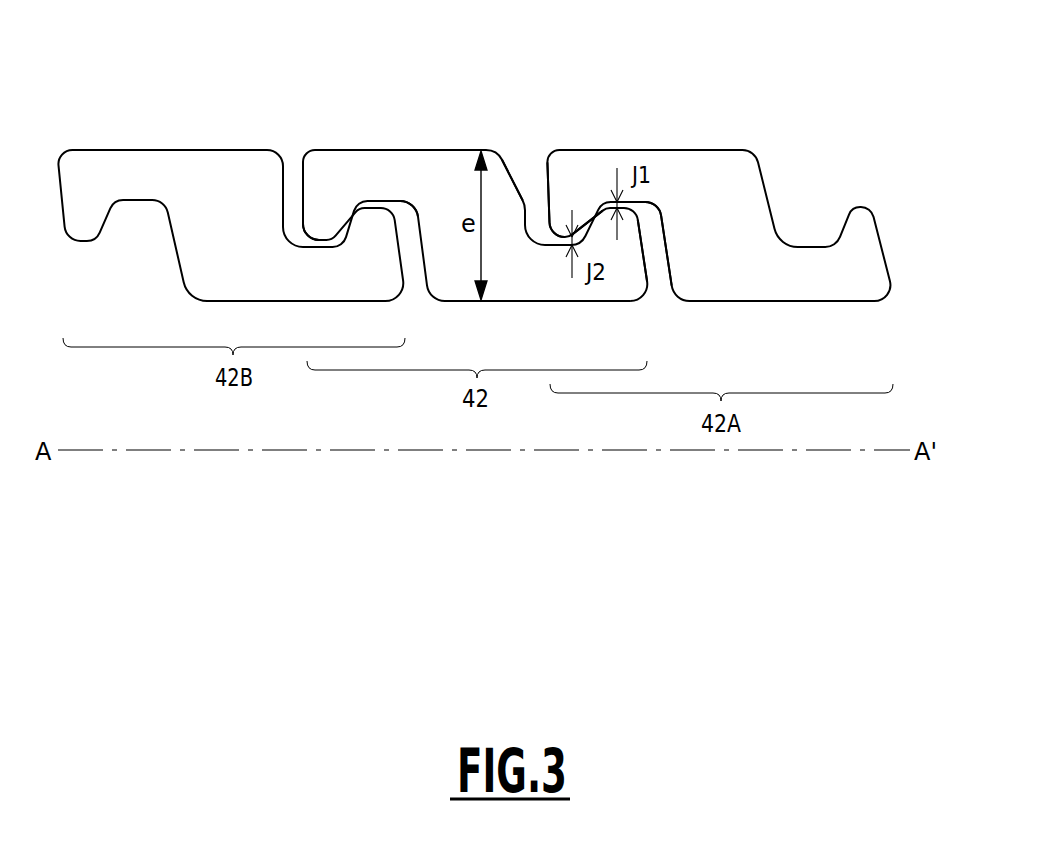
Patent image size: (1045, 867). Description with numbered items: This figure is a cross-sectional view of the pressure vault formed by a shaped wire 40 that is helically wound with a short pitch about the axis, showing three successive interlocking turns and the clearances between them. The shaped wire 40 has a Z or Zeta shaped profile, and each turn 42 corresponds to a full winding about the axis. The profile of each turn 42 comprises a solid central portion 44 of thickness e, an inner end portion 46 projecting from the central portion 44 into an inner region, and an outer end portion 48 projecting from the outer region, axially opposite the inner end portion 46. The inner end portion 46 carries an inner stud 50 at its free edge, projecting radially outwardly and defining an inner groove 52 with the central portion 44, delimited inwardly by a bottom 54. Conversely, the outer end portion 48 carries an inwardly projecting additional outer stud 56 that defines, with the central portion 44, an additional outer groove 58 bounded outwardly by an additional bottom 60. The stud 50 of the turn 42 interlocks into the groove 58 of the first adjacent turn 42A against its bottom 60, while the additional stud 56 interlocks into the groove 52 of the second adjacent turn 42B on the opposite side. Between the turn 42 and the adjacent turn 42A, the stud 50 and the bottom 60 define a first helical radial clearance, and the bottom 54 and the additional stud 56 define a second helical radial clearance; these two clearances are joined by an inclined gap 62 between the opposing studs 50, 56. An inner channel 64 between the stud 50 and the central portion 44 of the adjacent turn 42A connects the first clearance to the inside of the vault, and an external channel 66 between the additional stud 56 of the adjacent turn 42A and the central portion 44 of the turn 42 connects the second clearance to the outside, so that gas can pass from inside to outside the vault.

The shaped wire 40 is at (877, 128).
The turn 42 is at (820, 288).
The first adjacent turn 42A is at (718, 225).
The second adjacent turn 42B is at (344, 225).
The central portion 44 is at (463, 203).
The inner end portion 46 is at (617, 272).
The outer end portion 48 is at (363, 183).
The inner stud 50 is at (666, 259).
The inner groove 52 is at (322, 272).
The bottom 54 is at (318, 243).
The additional outer stud 56 is at (327, 218).
The additional outer groove 58 is at (395, 184).
The additional bottom 60 is at (385, 200).
The inclined gap 62 is at (590, 203).
The inner channel 64 is at (657, 265).
The external channel 66 is at (537, 195).